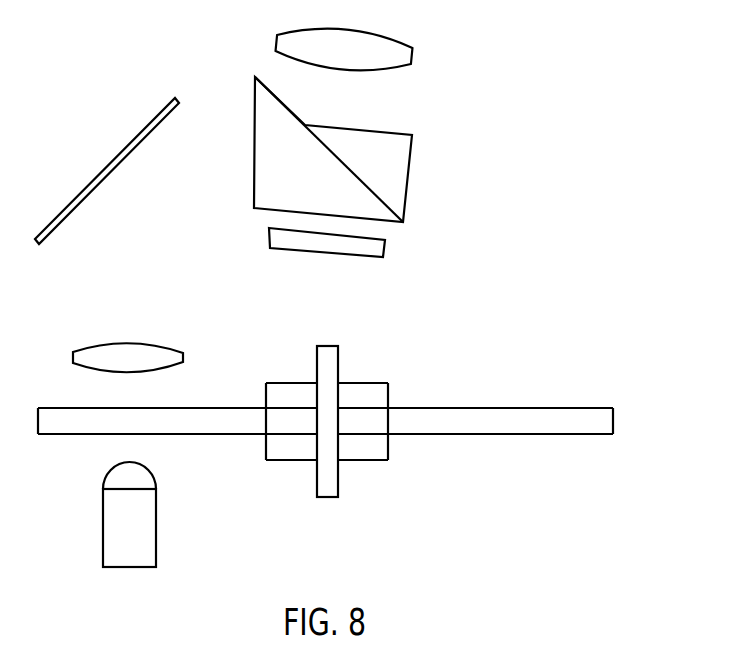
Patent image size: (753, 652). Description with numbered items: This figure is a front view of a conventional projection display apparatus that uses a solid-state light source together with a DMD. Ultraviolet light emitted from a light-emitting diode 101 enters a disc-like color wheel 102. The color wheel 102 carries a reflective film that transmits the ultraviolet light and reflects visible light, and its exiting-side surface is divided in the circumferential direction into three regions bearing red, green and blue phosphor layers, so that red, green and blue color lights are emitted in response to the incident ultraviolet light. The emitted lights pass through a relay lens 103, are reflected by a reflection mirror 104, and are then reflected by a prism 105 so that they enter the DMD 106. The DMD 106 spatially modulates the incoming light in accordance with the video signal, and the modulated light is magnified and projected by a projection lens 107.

The light-emitting diode 101 is at (147, 528).
The color wheel 102 is at (607, 423).
The relay lens 103 is at (173, 360).
The reflection mirror 104 is at (108, 166).
The prism 105 is at (402, 175).
The DMD 106 is at (378, 250).
The projection lens 107 is at (403, 55).